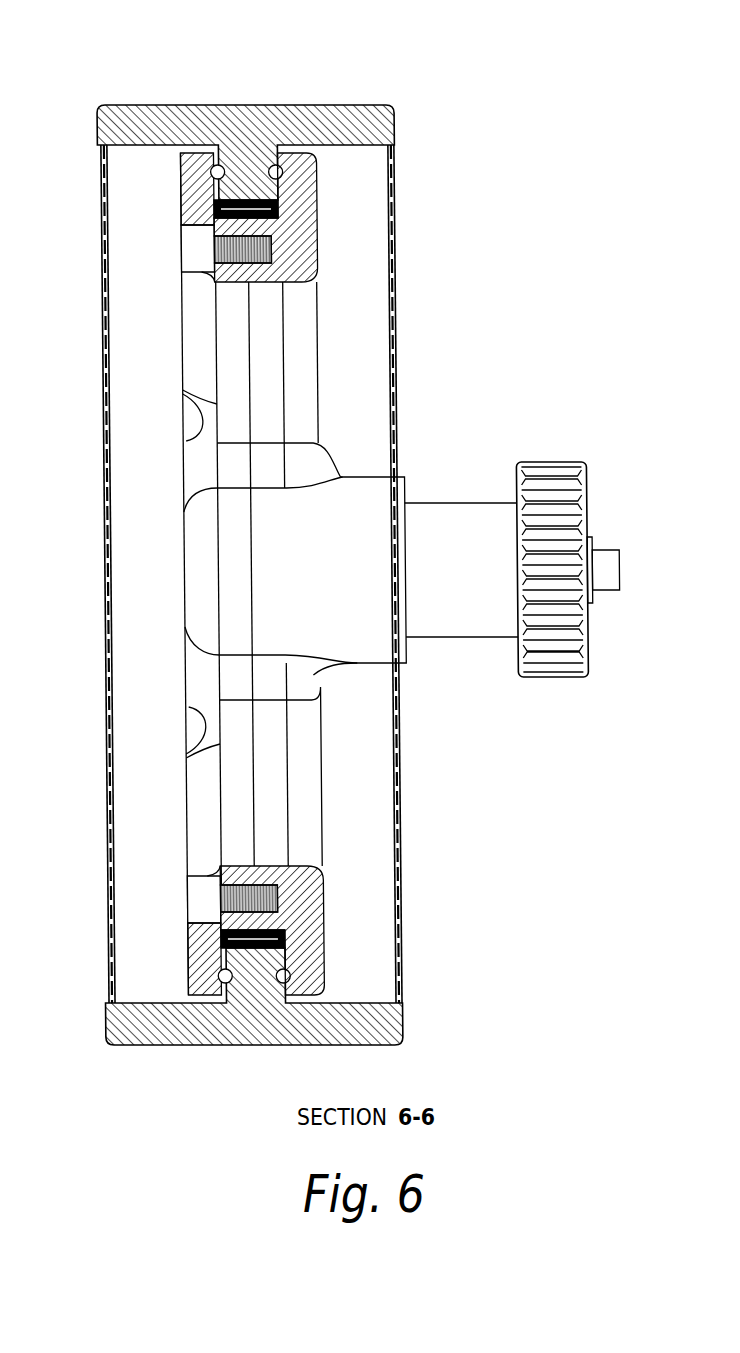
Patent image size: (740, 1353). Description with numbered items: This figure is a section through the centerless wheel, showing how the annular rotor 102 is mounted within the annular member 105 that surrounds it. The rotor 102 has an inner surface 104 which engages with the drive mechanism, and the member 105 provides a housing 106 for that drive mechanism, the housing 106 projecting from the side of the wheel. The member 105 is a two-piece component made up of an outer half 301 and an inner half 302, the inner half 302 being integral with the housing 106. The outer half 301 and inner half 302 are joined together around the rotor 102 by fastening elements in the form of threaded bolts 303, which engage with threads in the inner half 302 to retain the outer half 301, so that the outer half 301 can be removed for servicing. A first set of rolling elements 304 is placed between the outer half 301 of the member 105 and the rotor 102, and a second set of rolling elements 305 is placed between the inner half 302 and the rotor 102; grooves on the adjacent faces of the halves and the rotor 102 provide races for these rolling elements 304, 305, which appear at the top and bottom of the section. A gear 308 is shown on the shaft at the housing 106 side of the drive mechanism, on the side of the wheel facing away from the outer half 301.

The rotor 102 is at (122, 108).
The inner surface 104 is at (378, 864).
The member 105 is at (249, 102).
The housing 106 is at (423, 620).
The outer half 301 is at (190, 656).
The inner half 302 is at (315, 675).
The threaded bolts 303 is at (187, 258).
The first set of rolling elements 304 is at (183, 217).
The second set of rolling elements 305 is at (316, 222).
The gear 308 is at (570, 463).